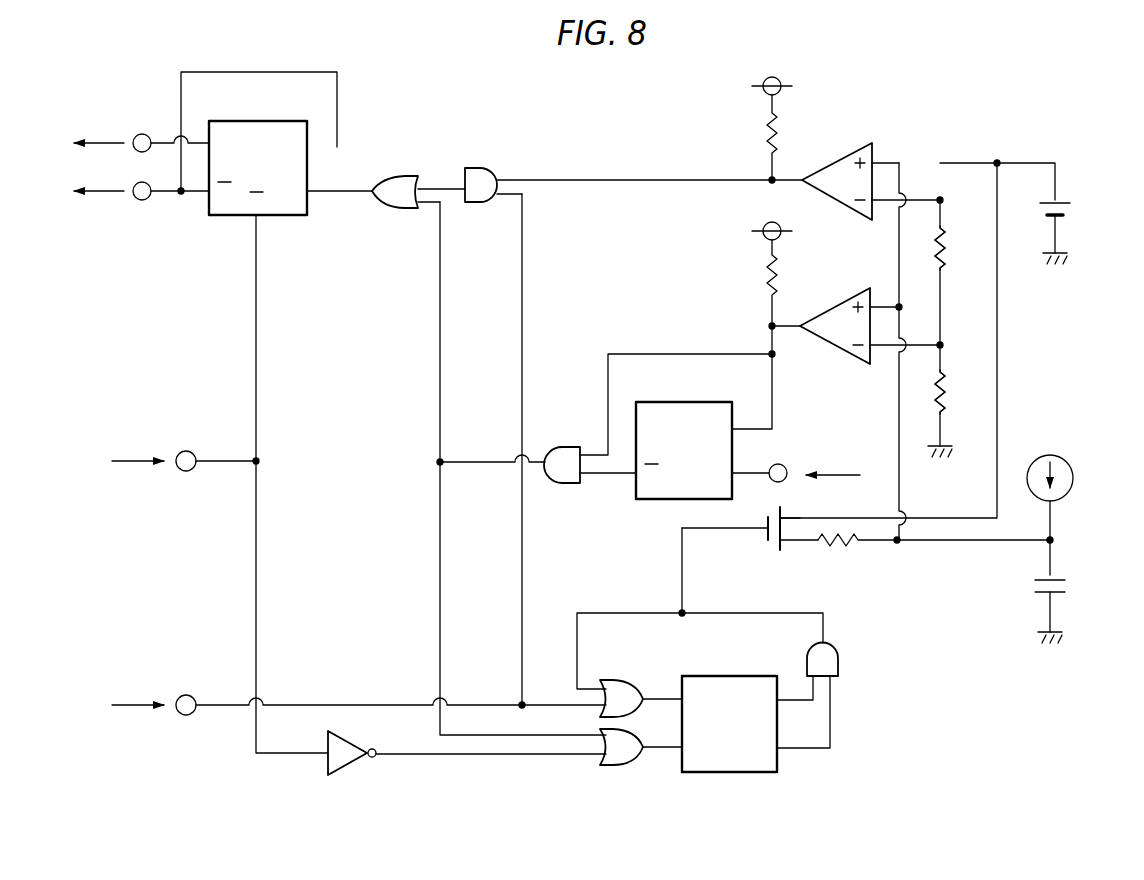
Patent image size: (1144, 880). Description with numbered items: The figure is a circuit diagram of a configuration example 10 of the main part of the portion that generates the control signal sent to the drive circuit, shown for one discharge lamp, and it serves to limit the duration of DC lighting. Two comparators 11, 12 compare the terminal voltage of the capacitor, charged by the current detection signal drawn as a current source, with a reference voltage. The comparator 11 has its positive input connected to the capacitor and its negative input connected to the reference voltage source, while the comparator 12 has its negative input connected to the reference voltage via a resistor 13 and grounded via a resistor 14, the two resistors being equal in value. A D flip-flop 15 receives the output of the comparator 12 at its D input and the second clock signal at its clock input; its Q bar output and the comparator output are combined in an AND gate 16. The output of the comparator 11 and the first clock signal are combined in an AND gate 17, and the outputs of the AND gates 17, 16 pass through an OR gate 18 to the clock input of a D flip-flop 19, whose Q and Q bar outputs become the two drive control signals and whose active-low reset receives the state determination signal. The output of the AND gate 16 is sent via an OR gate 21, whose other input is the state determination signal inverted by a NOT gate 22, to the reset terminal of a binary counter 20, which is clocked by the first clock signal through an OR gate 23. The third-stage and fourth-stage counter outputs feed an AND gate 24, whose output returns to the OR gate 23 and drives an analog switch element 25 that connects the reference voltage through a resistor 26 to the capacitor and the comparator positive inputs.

The configuration example 10 is at (1090, 372).
The comparator 11 is at (838, 160).
The comparator 12 is at (838, 306).
The resistor 13 is at (946, 246).
The resistor 14 is at (946, 392).
The D flip-flop 15 is at (686, 402).
The AND gate 16 is at (568, 447).
The AND gate 17 is at (483, 168).
The OR gate 18 is at (401, 176).
The D flip-flop 19 is at (258, 121).
The binary counter 20 is at (729, 676).
The OR gate 21 is at (612, 765).
The NOT gate 22 is at (360, 748).
The OR gate 23 is at (612, 681).
The AND gate 24 is at (841, 655).
The analog switch element 25 is at (760, 548).
The resistor 26 is at (836, 548).